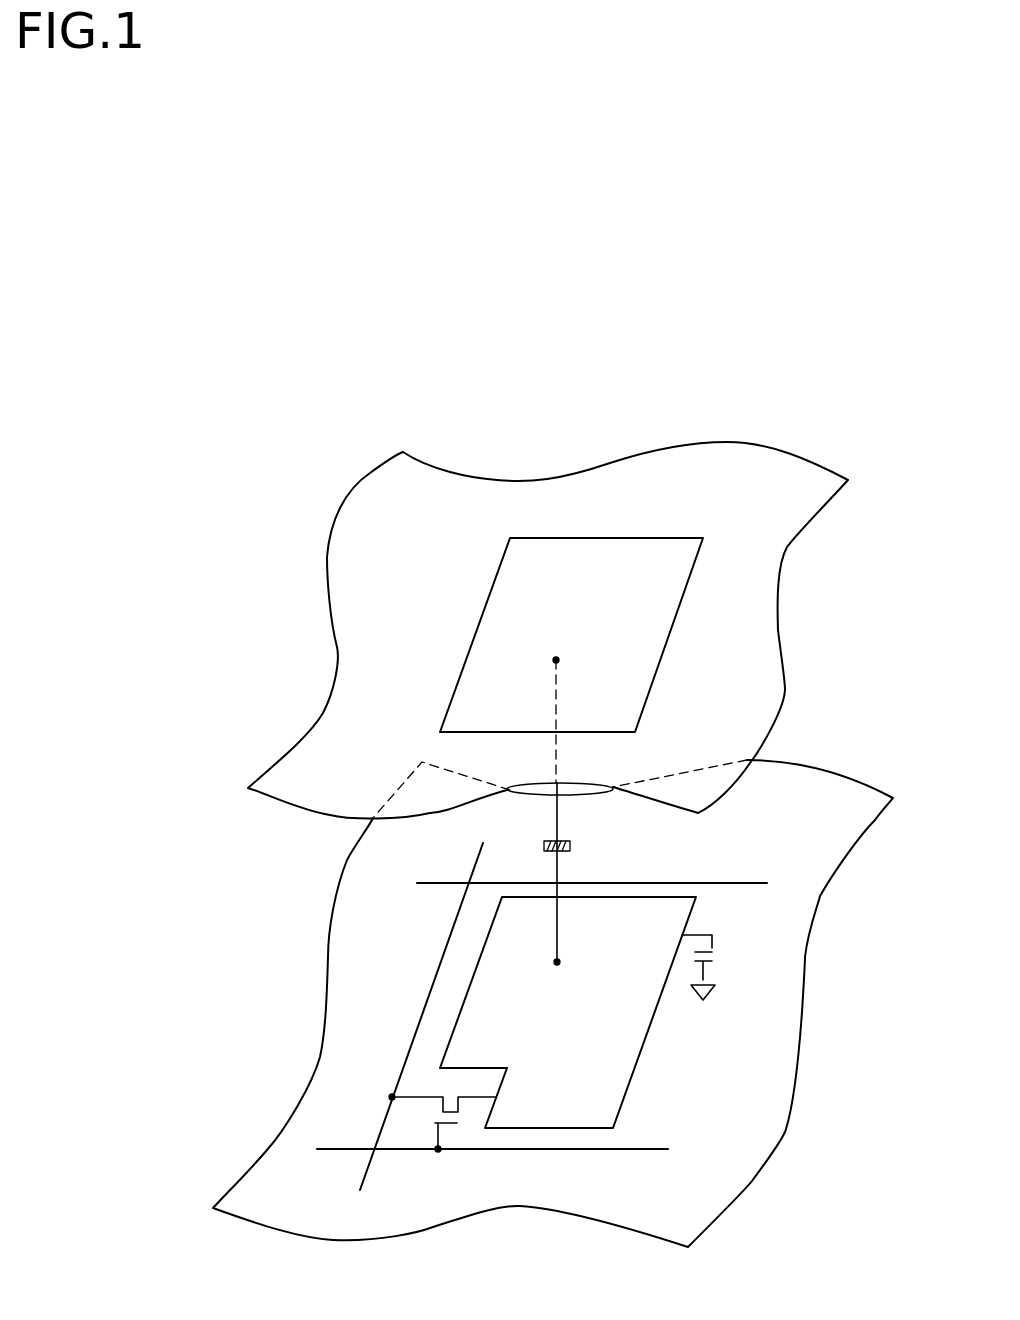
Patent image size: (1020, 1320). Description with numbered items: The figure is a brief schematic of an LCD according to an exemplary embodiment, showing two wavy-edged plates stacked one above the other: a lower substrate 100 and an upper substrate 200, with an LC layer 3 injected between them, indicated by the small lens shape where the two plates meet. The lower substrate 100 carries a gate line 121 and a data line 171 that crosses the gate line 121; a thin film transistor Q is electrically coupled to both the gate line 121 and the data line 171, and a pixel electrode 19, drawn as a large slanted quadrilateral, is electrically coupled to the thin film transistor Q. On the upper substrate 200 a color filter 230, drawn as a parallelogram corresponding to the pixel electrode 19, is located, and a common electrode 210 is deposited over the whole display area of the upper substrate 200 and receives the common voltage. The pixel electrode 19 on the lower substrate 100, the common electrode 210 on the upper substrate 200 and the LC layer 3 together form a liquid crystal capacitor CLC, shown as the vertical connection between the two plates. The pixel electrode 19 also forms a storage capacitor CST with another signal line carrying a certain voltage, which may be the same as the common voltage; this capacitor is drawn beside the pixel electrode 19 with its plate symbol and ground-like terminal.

The LC layer 3 is at (247, 897).
The pixel electrode 19 is at (637, 1066).
The lower substrate 100 is at (808, 980).
The gate line 121 is at (716, 884).
The data line 171 is at (440, 958).
The upper substrate 200 is at (574, 630).
The common electrode 210 is at (777, 600).
The color filter 230 is at (667, 650).
The thin film transistor Q is at (442, 1123).
The liquid crystal capacitor CLC is at (587, 874).
The storage capacitor CST is at (721, 967).